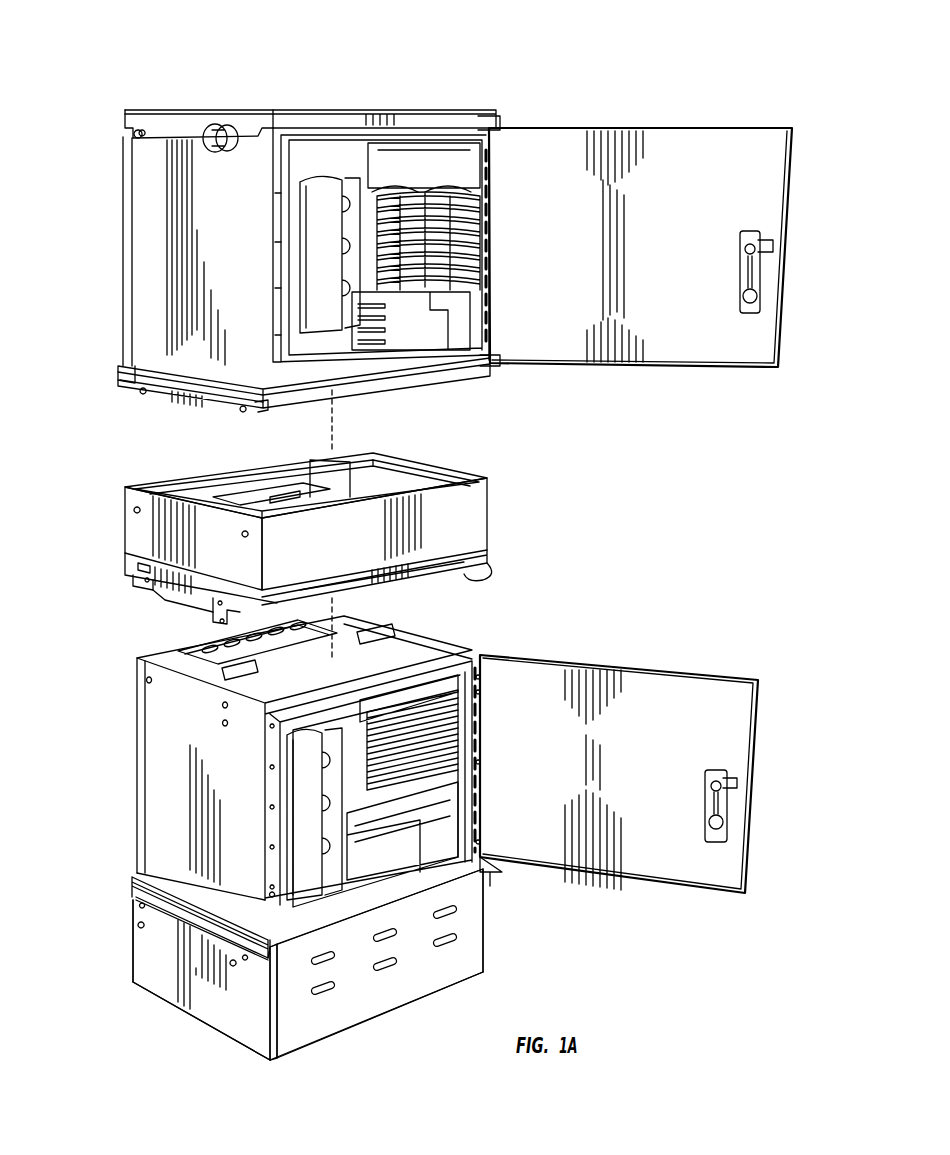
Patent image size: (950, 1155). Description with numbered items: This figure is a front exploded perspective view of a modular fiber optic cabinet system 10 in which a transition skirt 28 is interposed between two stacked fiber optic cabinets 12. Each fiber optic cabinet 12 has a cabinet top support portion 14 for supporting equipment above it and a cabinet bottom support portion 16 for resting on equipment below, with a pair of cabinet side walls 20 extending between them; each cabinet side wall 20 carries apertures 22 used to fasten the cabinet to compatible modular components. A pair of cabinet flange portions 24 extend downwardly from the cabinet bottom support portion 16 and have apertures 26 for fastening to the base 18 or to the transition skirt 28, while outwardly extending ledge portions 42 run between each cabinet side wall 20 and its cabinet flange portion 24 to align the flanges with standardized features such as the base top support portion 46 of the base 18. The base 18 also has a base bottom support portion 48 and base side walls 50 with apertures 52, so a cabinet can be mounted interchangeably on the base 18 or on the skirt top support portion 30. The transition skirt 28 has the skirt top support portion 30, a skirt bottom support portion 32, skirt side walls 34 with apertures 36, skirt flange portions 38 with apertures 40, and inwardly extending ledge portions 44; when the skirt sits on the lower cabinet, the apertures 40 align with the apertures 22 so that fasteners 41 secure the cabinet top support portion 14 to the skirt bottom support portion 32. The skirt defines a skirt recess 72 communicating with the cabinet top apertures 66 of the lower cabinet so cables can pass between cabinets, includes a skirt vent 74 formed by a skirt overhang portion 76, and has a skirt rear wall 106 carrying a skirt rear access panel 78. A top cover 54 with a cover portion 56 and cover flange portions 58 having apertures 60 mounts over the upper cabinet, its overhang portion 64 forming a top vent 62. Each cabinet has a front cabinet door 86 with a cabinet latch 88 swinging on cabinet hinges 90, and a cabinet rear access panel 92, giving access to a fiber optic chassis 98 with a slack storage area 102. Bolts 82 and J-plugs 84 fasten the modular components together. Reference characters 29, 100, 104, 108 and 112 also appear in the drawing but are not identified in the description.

The modular fiber optic cabinet system 10 is at (106, 50).
The fiber optic cabinet 12 is at (115, 245).
The cabinet top support portion 14 is at (460, 672).
The cabinet bottom support portion 16 is at (122, 367).
The base 18 is at (165, 210).
The cabinet side wall 20 is at (152, 737).
The apertures 22 is at (222, 720).
The cabinet flange portion 24 is at (170, 915).
The apertures 26 is at (141, 391).
The transition skirt 28 is at (112, 526).
The lip 29 is at (162, 394).
The skirt top support portion 30 is at (132, 487).
The skirt bottom support portion 32 is at (132, 556).
The skirt side wall 34 is at (132, 540).
The apertures 36 is at (242, 531).
The skirt flange portion 38 is at (152, 592).
The apertures 40 is at (146, 580).
The fastener 41 is at (136, 385).
The outwardly extending ledge portion 42 is at (162, 368).
The inwardly extending ledge portion 44 is at (140, 568).
The base top support portion 46 is at (266, 960).
The base bottom support portion 48 is at (260, 1046).
The base side wall 50 is at (177, 990).
The apertures 52 is at (140, 903).
The top cover 54 is at (118, 114).
The cover portion 56 is at (312, 110).
The cover flange portion 58 is at (183, 122).
The apertures 60 is at (144, 128).
The top vent 62 is at (497, 140).
The overhang portion 64 is at (498, 120).
The cabinet top apertures 66 is at (240, 640).
The skirt recess 72 is at (385, 475).
The skirt vent 74 is at (492, 572).
The skirt overhang portion 76 is at (490, 556).
The skirt rear access panel 78 is at (283, 496).
The bolts 82 is at (138, 126).
The J-plugs 84 is at (216, 128).
The front cabinet door 86 is at (772, 138).
The cabinet latch 88 is at (758, 272).
The cabinet hinge 90 is at (489, 300).
The cabinet rear access panel 92 is at (130, 155).
The fiber optic chassis 98 is at (412, 157).
The gasket 100 is at (457, 787).
The slack storage area 102 is at (325, 215).
The side wall 104 is at (481, 498).
The skirt rear wall 106 is at (320, 470).
The front panel 108 is at (482, 948).
The hinge pin 112 is at (490, 366).